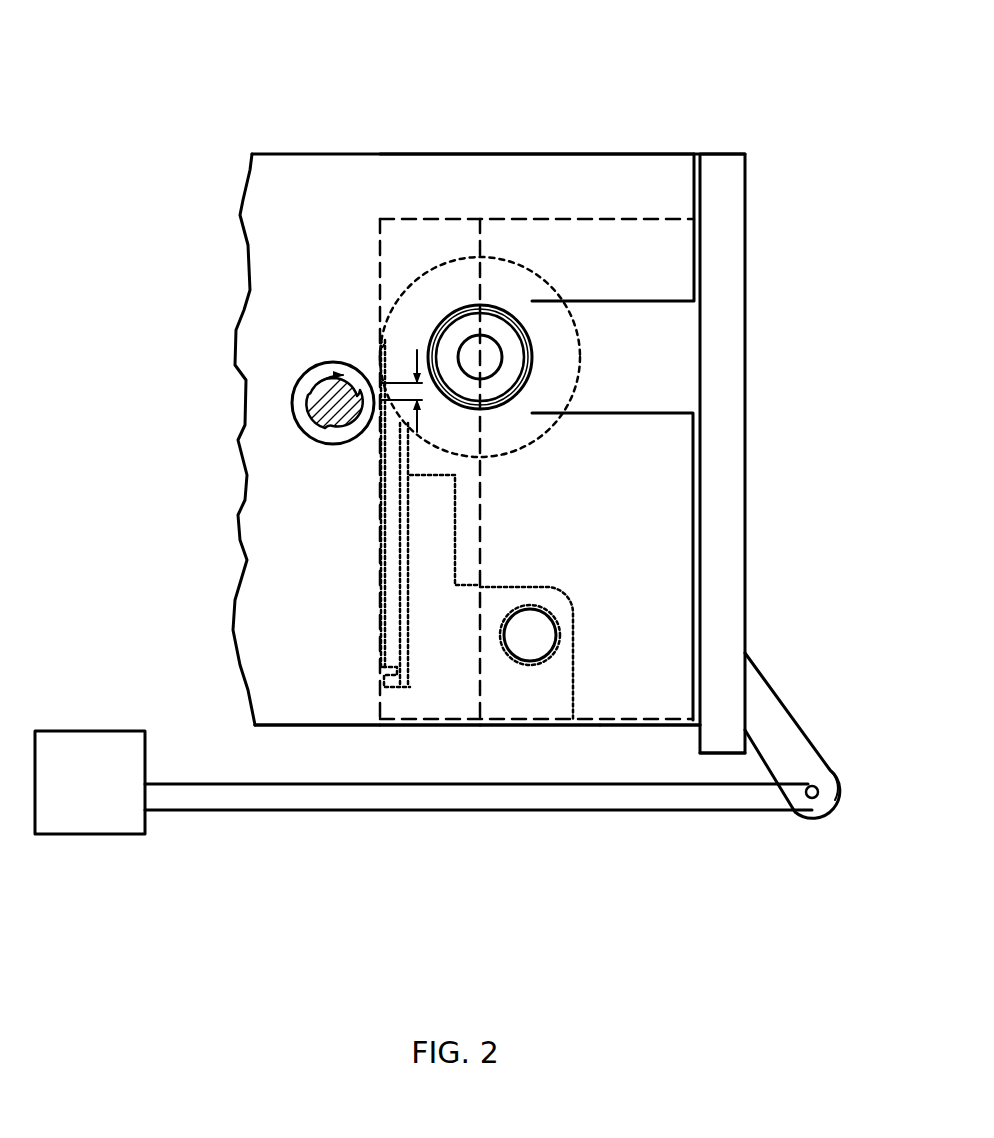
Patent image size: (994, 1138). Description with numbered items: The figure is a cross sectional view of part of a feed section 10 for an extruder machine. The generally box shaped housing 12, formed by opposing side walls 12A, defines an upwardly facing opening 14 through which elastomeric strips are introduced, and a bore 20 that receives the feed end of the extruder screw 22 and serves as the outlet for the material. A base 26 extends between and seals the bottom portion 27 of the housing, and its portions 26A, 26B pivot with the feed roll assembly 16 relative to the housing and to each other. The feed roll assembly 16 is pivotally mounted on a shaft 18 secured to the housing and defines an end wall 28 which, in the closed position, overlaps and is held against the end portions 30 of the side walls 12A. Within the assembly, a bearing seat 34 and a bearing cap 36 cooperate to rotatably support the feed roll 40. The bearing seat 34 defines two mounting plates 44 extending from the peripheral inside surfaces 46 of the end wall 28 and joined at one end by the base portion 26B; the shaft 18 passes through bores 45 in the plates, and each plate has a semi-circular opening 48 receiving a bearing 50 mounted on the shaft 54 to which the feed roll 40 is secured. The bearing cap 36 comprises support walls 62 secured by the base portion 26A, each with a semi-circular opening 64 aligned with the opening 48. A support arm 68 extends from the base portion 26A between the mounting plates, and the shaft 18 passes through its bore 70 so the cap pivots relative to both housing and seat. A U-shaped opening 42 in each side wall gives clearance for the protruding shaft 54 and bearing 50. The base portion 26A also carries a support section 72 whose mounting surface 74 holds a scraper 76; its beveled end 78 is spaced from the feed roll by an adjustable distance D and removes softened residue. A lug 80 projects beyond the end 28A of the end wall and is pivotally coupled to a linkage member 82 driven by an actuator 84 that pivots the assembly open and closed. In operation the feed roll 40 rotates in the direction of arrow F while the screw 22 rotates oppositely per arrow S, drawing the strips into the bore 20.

The feed section 10 is at (148, 70).
The housing 12 is at (316, 135).
The side walls 12A is at (310, 197).
The opening 14 is at (517, 130).
The feed roll assembly 16 is at (565, 195).
The shaft 18 is at (515, 640).
The bore 20 is at (328, 432).
The extruder screw 22 is at (340, 395).
The base 26 is at (278, 738).
The base portion 26A is at (418, 730).
The base portion 26B is at (600, 735).
The bottom portion 27 is at (525, 735).
The end wall 28 is at (735, 175).
The end 28A is at (725, 753).
The end portions 30 is at (697, 195).
The bearing seat 34 is at (640, 527).
The bearing cap 36 is at (383, 238).
The feed roll 40 is at (560, 425).
The U-shaped opening 42 is at (600, 325).
The mounting plates 44 is at (630, 685).
The bores 45 is at (555, 590).
The peripheral inside surfaces 46 is at (700, 742).
The semi-circular opening 48 is at (500, 400).
The bearing 50 is at (512, 368).
The shaft 54 is at (485, 352).
The support walls 62 is at (398, 248).
The semi-circular opening 64 is at (437, 340).
The support arm 68 is at (497, 602).
The bore 70 is at (517, 670).
The support section 72 is at (422, 582).
The mounting surface 74 is at (410, 548).
The scraper 76 is at (382, 505).
The beveled end 78 is at (380, 380).
The lug 80 is at (775, 735).
The linkage member 82 is at (273, 797).
The actuator 84 is at (85, 812).
The distance D is at (418, 380).
The arrow F is at (412, 262).
The arrow S is at (307, 385).